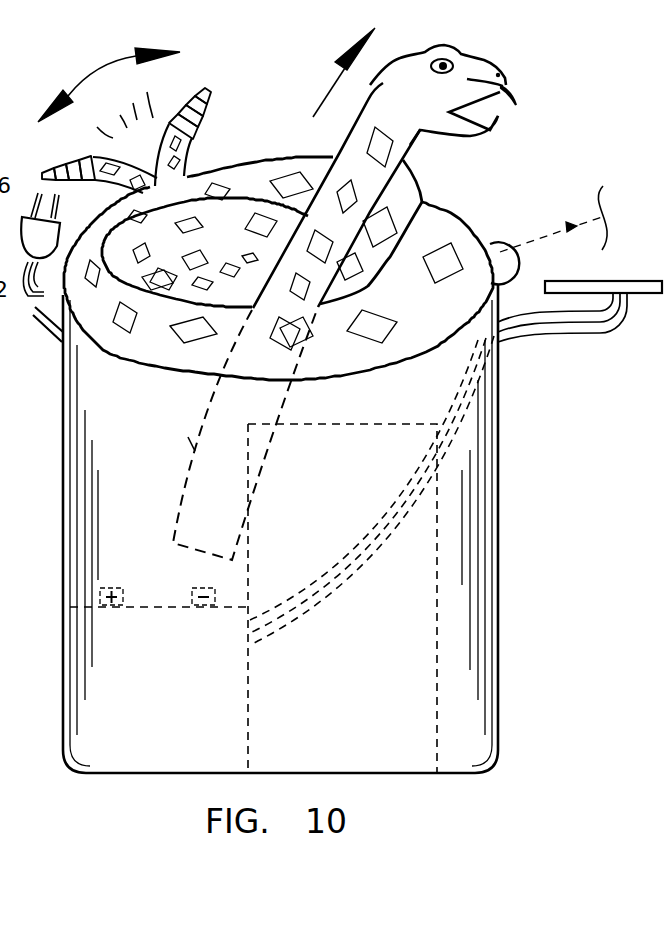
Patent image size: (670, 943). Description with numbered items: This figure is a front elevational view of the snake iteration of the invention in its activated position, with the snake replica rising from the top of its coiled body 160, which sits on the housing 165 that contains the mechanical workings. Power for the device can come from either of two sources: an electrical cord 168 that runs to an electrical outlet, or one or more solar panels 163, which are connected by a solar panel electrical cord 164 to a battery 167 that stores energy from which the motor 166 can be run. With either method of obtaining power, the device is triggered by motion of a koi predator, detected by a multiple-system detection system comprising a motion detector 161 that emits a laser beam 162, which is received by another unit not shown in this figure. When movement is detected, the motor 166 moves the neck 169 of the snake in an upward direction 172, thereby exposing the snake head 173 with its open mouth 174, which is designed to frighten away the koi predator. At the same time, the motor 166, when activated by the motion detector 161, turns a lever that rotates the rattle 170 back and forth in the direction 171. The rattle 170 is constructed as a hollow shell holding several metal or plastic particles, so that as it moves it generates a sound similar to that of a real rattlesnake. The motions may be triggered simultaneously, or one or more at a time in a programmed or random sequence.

The coiled snake body / ring 160 is at (451, 229).
The motion detector 161 is at (498, 254).
The laser beam 162 is at (570, 228).
The solar panel 163 is at (640, 281).
The solar panel electrical cord 164 is at (628, 310).
The canister housing 165 is at (500, 445).
The motor 166 is at (368, 684).
The battery 167 is at (181, 704).
The electrical cord 168 is at (43, 323).
The neck 169 is at (191, 445).
The rattle 170 is at (212, 90).
The direction of rattle rotation 171 is at (88, 83).
The upward direction 172 is at (326, 92).
The snake head 173 is at (480, 78).
The open mouth 174 is at (522, 99).